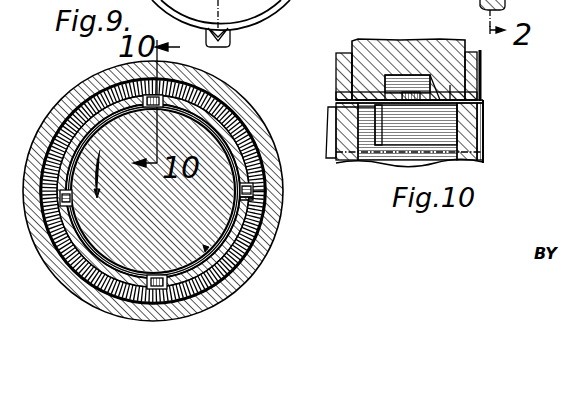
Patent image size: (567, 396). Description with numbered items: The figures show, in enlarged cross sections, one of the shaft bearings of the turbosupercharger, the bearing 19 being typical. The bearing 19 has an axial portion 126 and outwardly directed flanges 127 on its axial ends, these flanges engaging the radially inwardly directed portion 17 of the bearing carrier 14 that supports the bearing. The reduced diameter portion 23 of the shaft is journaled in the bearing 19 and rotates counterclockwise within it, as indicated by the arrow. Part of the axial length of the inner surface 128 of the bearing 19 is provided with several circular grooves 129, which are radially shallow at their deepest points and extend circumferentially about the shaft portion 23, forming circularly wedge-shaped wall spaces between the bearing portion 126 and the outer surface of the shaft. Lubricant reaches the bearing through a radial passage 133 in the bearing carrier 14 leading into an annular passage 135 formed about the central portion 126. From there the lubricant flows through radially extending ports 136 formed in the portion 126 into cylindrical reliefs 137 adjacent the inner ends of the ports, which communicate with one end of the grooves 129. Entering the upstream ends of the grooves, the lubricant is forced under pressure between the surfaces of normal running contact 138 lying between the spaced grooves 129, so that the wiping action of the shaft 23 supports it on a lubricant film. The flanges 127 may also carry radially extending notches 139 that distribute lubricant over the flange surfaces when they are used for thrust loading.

In FIG. 9, the bearing carrier 14 is at (241, 92).
In FIG. 10, the bearing carrier 14 is at (393, 40).
In FIG. 9, the radially inwardly directed portion 17 is at (250, 230).
In FIG. 10, the radially inwardly directed portion 17 is at (355, 78).
In FIG. 9, the bearing 19 is at (241, 143).
In FIG. 10, the bearing 19 is at (450, 85).
In FIG. 9, the reduced diameter portion 23 is at (217, 253).
In FIG. 10, the reduced diameter portion 23 is at (482, 103).
In FIG. 9, the axial portion 126 is at (200, 120).
In FIG. 10, the axial portion 126 is at (370, 160).
In FIG. 10, the outwardly directed flange 127 is at (336, 70).
In FIG. 9, the inner surface 128 is at (245, 213).
In FIG. 10, the inner surface 128 is at (453, 138).
In FIG. 9, the circular groove 129 is at (230, 165).
In FIG. 10, the circular groove 129 is at (487, 153).
In FIG. 9, the radial passage 133 is at (160, 312).
In FIG. 9, the annular passage 135 is at (118, 88).
In FIG. 10, the annular passage 135 is at (430, 75).
In FIG. 9, the radially extending port 136 is at (252, 184).
In FIG. 10, the radially extending port 136 is at (410, 100).
In FIG. 9, the cylindrical relief 137 is at (252, 191).
In FIG. 10, the cylindrical relief 137 is at (470, 117).
In FIG. 9, the surface of normal running contact 138 is at (85, 158).
In FIG. 10, the surface of normal running contact 138 is at (382, 103).
In FIG. 10, the radially extending notch 139 is at (481, 80).